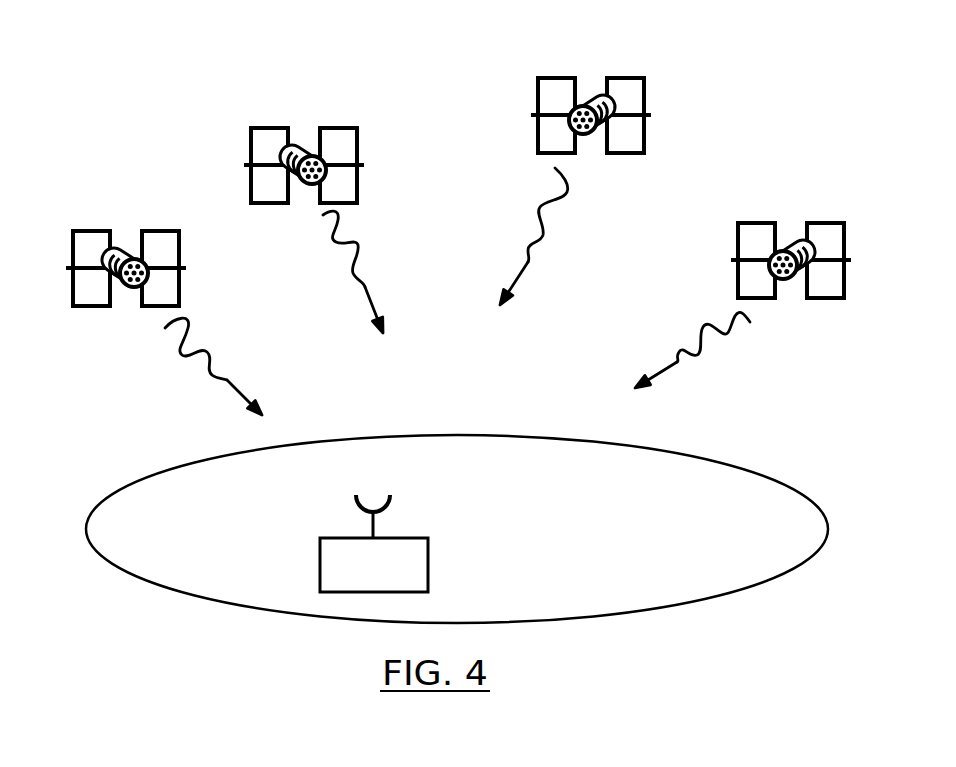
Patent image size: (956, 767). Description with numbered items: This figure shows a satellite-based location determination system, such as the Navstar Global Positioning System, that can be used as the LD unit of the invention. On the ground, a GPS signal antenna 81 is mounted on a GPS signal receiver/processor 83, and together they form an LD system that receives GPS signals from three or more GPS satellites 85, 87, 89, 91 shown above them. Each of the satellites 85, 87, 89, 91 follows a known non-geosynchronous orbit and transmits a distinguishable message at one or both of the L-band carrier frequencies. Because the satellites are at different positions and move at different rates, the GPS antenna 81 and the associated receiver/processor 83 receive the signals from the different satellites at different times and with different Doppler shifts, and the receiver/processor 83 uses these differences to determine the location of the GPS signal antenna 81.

The GPS signal antenna 81 is at (392, 507).
The GPS signal receiver/processor 83 is at (390, 573).
The GPS satellite 85 is at (130, 257).
The GPS satellite 87 is at (310, 157).
The GPS satellite 89 is at (592, 93).
The GPS satellite 91 is at (788, 243).